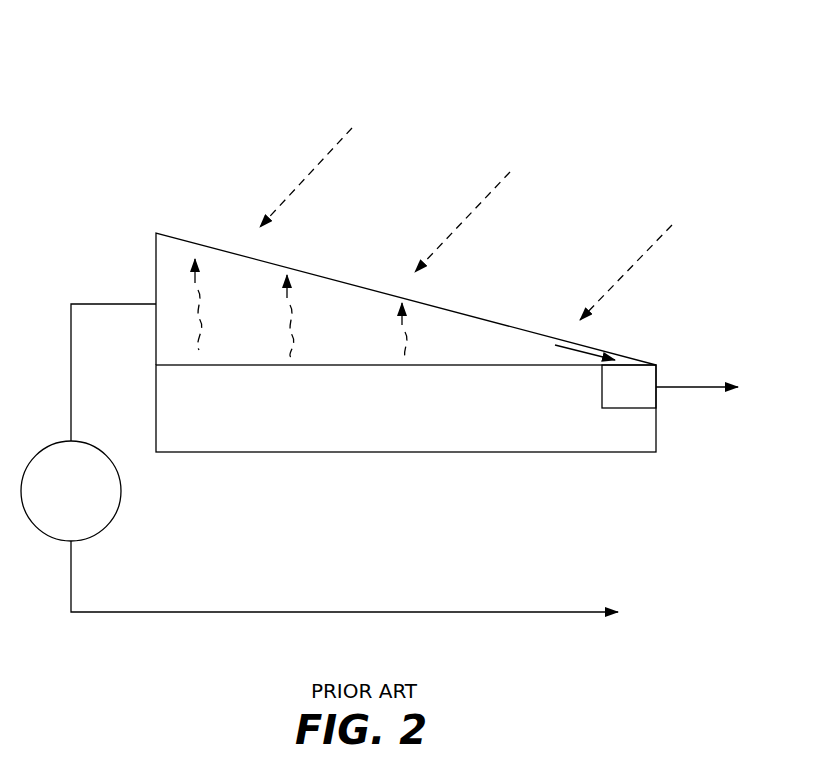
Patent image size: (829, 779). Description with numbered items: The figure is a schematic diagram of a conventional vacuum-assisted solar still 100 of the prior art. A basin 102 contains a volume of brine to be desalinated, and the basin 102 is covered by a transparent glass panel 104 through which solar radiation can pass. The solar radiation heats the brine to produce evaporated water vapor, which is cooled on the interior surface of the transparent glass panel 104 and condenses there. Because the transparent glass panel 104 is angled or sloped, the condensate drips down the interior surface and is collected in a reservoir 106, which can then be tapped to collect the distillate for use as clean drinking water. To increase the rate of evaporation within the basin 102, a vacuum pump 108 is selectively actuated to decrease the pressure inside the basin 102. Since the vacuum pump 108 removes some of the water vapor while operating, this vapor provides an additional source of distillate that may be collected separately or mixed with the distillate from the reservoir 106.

The vacuum-assisted solar still 100 is at (108, 83).
The basin 102 is at (503, 453).
The transparent glass panel 104 is at (475, 317).
The reservoir 106 is at (657, 400).
The vacuum pump 108 is at (117, 510).